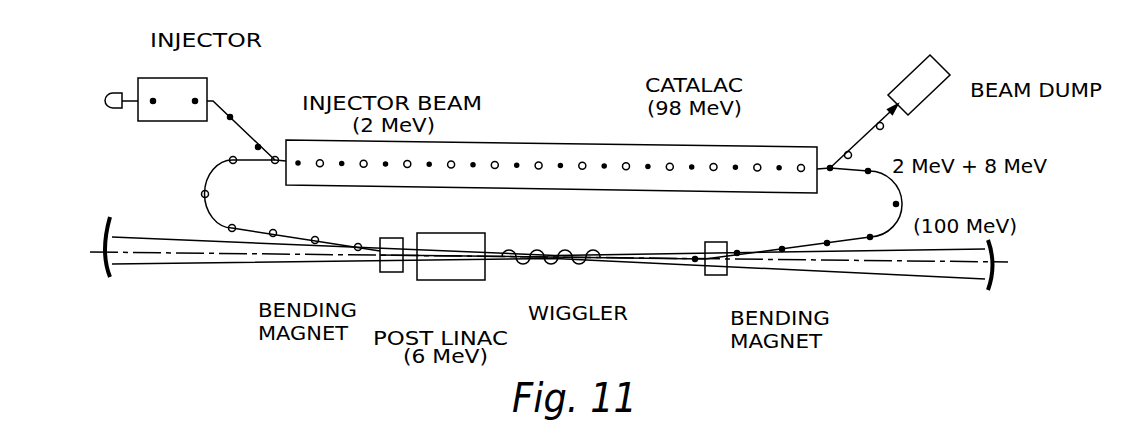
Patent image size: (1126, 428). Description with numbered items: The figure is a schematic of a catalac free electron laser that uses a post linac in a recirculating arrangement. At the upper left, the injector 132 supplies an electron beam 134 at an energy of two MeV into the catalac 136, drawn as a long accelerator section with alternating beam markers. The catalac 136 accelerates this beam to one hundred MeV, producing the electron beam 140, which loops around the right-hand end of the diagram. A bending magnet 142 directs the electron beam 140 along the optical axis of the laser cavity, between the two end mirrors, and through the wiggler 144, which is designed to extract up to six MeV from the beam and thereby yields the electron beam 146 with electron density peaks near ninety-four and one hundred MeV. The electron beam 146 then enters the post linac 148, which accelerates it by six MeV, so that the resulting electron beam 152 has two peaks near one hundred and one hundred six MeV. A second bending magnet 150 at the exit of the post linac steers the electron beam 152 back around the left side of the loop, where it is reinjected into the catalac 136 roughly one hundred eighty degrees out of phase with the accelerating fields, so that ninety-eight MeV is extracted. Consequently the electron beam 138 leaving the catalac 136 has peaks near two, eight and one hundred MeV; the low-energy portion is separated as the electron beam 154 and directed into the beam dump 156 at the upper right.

The injector 132 is at (190, 70).
The electron beam 134 is at (242, 123).
The catalac 136 is at (650, 147).
The electron beam 138 is at (828, 166).
The electron beam 140 is at (895, 193).
The bending magnet 142 is at (717, 277).
The wiggler 144 is at (547, 263).
The electron beam 146 is at (490, 252).
The post linac 148 is at (452, 282).
The bending magnet 150 is at (367, 271).
The electron beam 152 is at (222, 223).
The electron beam 154 is at (873, 137).
The beam dump 156 is at (948, 84).